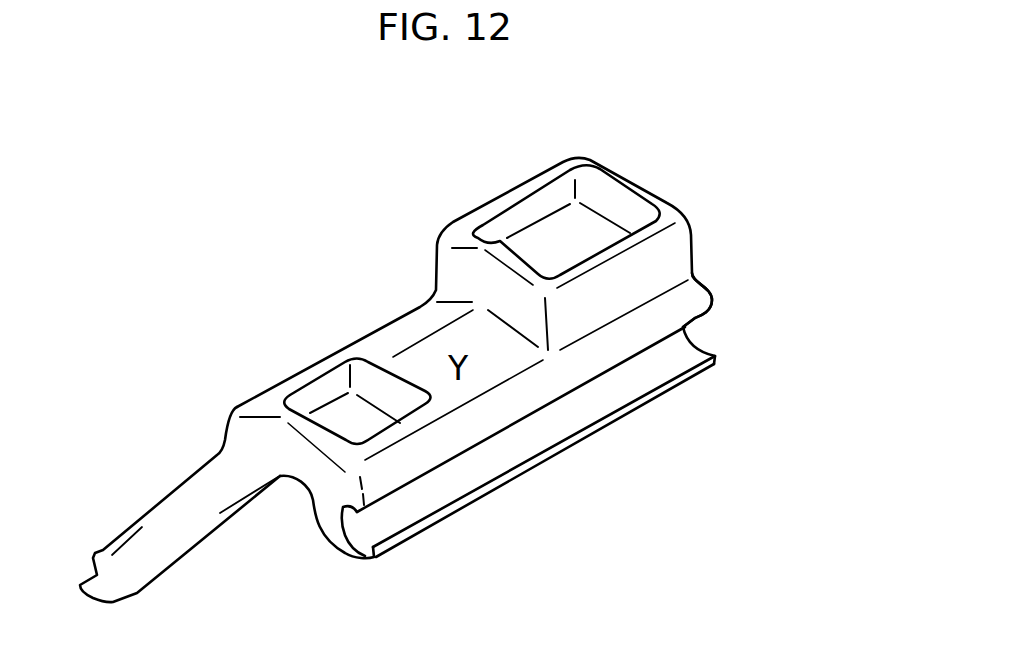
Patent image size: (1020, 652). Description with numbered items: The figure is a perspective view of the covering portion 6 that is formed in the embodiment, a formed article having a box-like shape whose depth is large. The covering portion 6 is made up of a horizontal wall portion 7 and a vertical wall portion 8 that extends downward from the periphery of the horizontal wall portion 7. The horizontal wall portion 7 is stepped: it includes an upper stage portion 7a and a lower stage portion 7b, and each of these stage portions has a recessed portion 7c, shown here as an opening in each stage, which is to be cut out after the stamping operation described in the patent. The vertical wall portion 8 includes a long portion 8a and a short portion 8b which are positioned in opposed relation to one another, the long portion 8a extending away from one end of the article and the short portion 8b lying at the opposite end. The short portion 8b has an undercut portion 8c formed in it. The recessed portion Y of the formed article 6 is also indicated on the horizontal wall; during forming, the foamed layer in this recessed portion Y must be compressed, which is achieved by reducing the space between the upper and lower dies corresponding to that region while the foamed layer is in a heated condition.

The covering portion 6 is at (670, 170).
The horizontal wall portion 7 is at (460, 299).
The lower stage portion 7b is at (392, 337).
The upper stage portion 7a is at (585, 168).
The recessed portion 7c is at (513, 220).
The vertical wall portion 8 is at (459, 435).
The long portion 8a is at (167, 503).
The short portion 8b is at (690, 303).
The undercut portion 8c is at (355, 518).